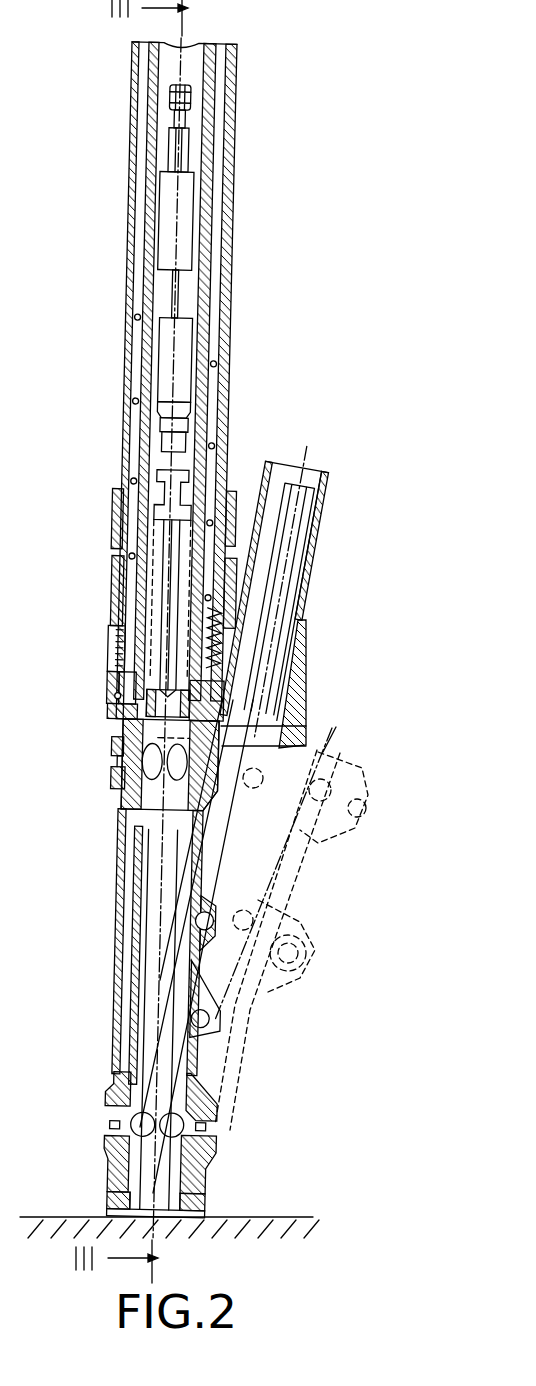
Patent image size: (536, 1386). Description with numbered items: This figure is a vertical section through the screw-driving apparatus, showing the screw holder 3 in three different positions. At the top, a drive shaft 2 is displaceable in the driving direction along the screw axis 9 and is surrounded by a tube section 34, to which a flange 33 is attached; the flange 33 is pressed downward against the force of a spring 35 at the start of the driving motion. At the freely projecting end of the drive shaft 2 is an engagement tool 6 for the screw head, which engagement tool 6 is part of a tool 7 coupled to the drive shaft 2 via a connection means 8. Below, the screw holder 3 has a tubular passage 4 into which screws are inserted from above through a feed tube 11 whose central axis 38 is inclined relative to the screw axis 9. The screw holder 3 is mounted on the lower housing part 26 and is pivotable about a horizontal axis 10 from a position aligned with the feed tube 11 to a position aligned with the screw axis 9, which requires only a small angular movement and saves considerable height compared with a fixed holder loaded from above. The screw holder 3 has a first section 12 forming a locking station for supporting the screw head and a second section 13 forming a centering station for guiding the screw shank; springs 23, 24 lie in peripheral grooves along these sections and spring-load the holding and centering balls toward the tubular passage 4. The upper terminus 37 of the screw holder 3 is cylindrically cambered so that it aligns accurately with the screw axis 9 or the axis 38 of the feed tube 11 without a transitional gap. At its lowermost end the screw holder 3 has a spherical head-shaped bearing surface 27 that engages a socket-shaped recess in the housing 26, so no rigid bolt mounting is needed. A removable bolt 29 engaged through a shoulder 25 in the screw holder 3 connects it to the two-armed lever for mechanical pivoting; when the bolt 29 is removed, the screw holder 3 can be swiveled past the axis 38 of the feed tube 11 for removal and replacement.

The drive shaft 2 is at (190, 210).
The screw holder 3 is at (218, 1100).
The tubular passage 4 is at (166, 910).
The engagement tool 6 is at (164, 702).
The tool 7 is at (175, 537).
The connection means 8 is at (178, 478).
The screw axis 9 is at (181, 63).
The horizontal axis 10 is at (181, 1183).
The feed tube 11 is at (295, 542).
The first section 12 is at (116, 769).
The second section 13 is at (274, 1123).
The spring 23 is at (356, 808).
The spring 24 is at (244, 1133).
The shoulder 25 is at (236, 902).
The lower housing part 26 is at (136, 1178).
The bearing surface 27 is at (163, 1185).
The bolt 29 is at (233, 922).
The flange 33 is at (125, 540).
The tube section 34 is at (239, 300).
The spring 35 is at (128, 645).
The upper terminus 37 is at (358, 732).
The central axis of the feed tube 38 is at (303, 478).